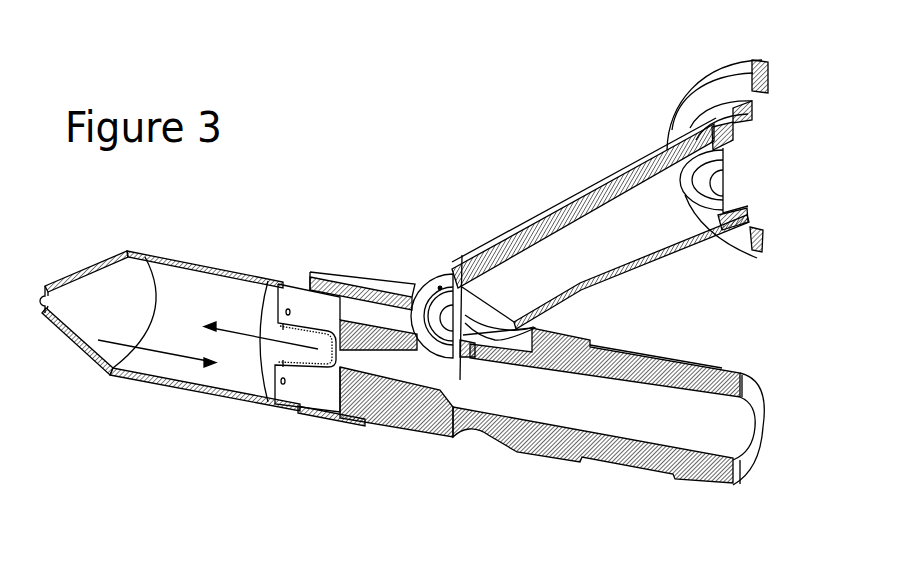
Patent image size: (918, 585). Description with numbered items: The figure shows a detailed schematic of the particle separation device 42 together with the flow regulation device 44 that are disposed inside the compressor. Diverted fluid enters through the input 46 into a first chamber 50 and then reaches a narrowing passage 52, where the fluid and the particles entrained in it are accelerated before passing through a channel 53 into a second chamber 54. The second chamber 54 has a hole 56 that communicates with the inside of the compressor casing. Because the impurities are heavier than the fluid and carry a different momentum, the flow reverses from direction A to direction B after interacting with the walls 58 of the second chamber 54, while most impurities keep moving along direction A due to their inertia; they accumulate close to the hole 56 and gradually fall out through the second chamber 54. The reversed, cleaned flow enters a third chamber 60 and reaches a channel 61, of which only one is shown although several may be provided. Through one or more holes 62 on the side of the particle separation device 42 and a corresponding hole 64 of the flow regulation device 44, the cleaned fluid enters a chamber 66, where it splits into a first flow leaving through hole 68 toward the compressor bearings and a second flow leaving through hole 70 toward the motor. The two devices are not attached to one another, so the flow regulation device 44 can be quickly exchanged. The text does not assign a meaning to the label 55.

The particle separation device 42 is at (618, 453).
The flow regulation device 44 is at (567, 217).
The input 46 is at (755, 424).
The first chamber 50 is at (553, 408).
The narrowing passage 52 is at (378, 357).
The channel 53 is at (309, 358).
The second chamber 54 is at (185, 313).
The hole 55 is at (282, 385).
The hole 56 is at (60, 290).
The walls 58 is at (75, 340).
The third chamber 60 is at (307, 310).
The channel 61 is at (398, 325).
The hole 62 is at (500, 340).
The hole 64 is at (458, 380).
The chamber 66 is at (465, 295).
The hole 68 is at (435, 333).
The hole 70 is at (717, 162).
The direction A is at (240, 333).
The direction B is at (127, 348).